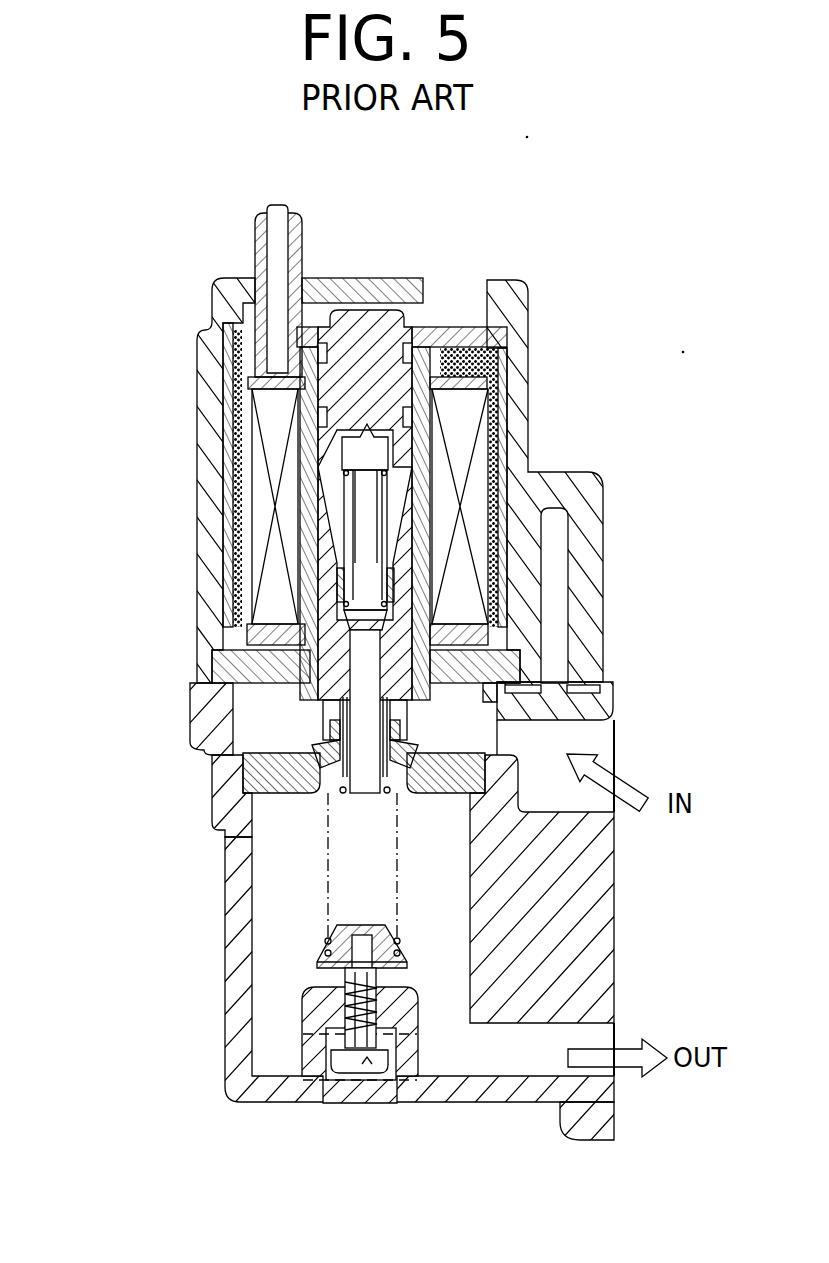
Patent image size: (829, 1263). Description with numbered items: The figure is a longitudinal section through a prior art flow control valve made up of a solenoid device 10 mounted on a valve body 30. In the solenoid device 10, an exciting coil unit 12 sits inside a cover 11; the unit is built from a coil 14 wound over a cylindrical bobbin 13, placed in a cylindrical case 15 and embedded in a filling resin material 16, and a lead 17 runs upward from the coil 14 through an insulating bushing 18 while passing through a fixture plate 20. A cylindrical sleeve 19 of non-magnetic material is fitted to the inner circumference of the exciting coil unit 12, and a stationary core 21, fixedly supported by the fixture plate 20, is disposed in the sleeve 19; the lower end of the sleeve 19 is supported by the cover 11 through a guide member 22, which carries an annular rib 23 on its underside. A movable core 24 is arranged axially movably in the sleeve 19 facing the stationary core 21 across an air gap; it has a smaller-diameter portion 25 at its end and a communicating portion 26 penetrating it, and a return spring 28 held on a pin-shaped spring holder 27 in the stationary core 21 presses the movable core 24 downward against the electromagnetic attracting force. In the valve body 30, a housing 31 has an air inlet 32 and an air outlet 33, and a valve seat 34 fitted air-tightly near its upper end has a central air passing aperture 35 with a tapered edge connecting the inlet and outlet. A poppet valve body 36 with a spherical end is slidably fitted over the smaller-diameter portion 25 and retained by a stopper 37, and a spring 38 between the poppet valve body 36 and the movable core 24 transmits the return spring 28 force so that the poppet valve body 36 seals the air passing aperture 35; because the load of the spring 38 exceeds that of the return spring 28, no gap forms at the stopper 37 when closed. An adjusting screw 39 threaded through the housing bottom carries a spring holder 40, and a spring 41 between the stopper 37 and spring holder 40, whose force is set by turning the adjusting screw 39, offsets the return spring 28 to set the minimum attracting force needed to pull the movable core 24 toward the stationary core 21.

The solenoid device 10 is at (197, 493).
The cover 11 is at (197, 542).
The exciting coil unit 12 is at (197, 442).
The cylindrical bobbin 13 is at (500, 340).
The coil 14 is at (508, 551).
The cylindrical case 15 is at (225, 397).
The filling resin material 16 is at (230, 352).
The lead 17 is at (270, 230).
The insulating bushing 18 is at (258, 255).
The cylindrical sleeve 19 is at (510, 391).
The fixture plate 20 is at (460, 315).
The stationary core 21 is at (360, 318).
The guide member 22 is at (208, 660).
The annular rib 23 is at (215, 705).
The movable core 24 is at (500, 680).
The smaller-diameter portion 25 is at (545, 722).
The communicating portion 26 is at (400, 640).
The spring holder 27 is at (390, 447).
The return spring 28 is at (420, 590).
The valve body 30 is at (223, 970).
The housing 31 is at (305, 1000).
The air inlet 32 is at (590, 803).
The air outlet 33 is at (577, 1085).
The valve seat 34 is at (262, 770).
The air passing aperture 35 is at (312, 752).
The poppet valve body 36 is at (323, 738).
The stopper 37 is at (235, 825).
The spring 38 is at (480, 740).
The adjusting screw 39 is at (350, 1005).
The spring holder 40 is at (318, 962).
The spring 41 is at (325, 856).